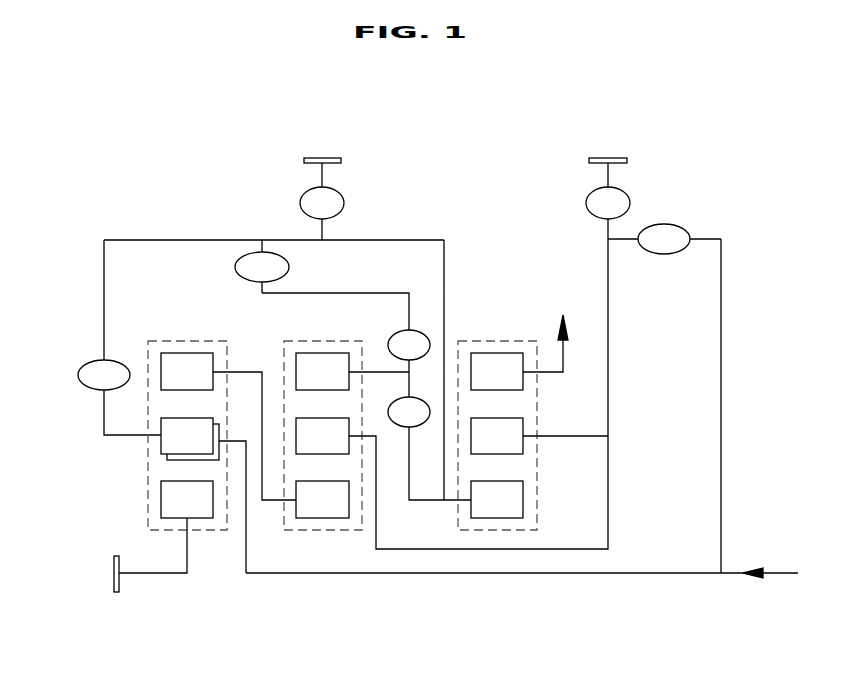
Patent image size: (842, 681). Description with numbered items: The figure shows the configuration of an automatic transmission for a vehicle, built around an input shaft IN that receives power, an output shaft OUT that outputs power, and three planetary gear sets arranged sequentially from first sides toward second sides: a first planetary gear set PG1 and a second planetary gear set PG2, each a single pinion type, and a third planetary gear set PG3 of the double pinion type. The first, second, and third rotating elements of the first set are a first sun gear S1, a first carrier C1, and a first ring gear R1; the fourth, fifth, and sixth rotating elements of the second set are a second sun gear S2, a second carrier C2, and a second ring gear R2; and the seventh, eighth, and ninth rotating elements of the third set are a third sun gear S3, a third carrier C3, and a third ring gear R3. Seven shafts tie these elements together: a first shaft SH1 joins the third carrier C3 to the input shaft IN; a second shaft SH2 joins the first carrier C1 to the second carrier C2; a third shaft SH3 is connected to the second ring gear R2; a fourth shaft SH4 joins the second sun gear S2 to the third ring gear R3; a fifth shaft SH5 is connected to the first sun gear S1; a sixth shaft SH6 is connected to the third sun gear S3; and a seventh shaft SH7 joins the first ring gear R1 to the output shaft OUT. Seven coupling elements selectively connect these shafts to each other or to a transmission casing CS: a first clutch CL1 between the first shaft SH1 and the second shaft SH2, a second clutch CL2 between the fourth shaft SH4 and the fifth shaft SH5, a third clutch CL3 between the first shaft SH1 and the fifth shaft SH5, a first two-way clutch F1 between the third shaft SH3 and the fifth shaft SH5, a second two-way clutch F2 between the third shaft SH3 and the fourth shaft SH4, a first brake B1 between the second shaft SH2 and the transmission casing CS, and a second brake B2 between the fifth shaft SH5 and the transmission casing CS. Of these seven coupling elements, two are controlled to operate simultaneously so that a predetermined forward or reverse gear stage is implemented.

The first shaft SH1 is at (652, 575).
The second shaft SH2 is at (610, 482).
The third shaft SH3 is at (378, 370).
The fourth shaft SH4 is at (268, 502).
The fifth shaft SH5 is at (104, 303).
The sixth shaft SH6 is at (153, 573).
The seventh shaft SH7 is at (553, 375).
The first planetary gear set PG1 is at (497, 532).
The second planetary gear set PG2 is at (322, 533).
The third planetary gear set PG3 is at (208, 530).
The first ring gear R1 is at (497, 371).
The first carrier C1 is at (497, 436).
The first sun gear S1 is at (497, 499).
The second ring gear R2 is at (322, 371).
The second carrier C2 is at (322, 436).
The second sun gear S2 is at (322, 499).
The third ring gear R3 is at (187, 371).
The third carrier C3 is at (190, 439).
The third sun gear S3 is at (187, 499).
The first clutch CL1 is at (664, 239).
The second clutch CL2 is at (262, 266).
The third clutch CL3 is at (104, 375).
The first brake B1 is at (608, 191).
The second brake B2 is at (322, 201).
The first two-way clutch F1 is at (409, 412).
The second two-way clutch F2 is at (409, 345).
The transmission casing CS is at (315, 152).
The input shaft IN is at (783, 563).
The output shaft OUT is at (563, 302).